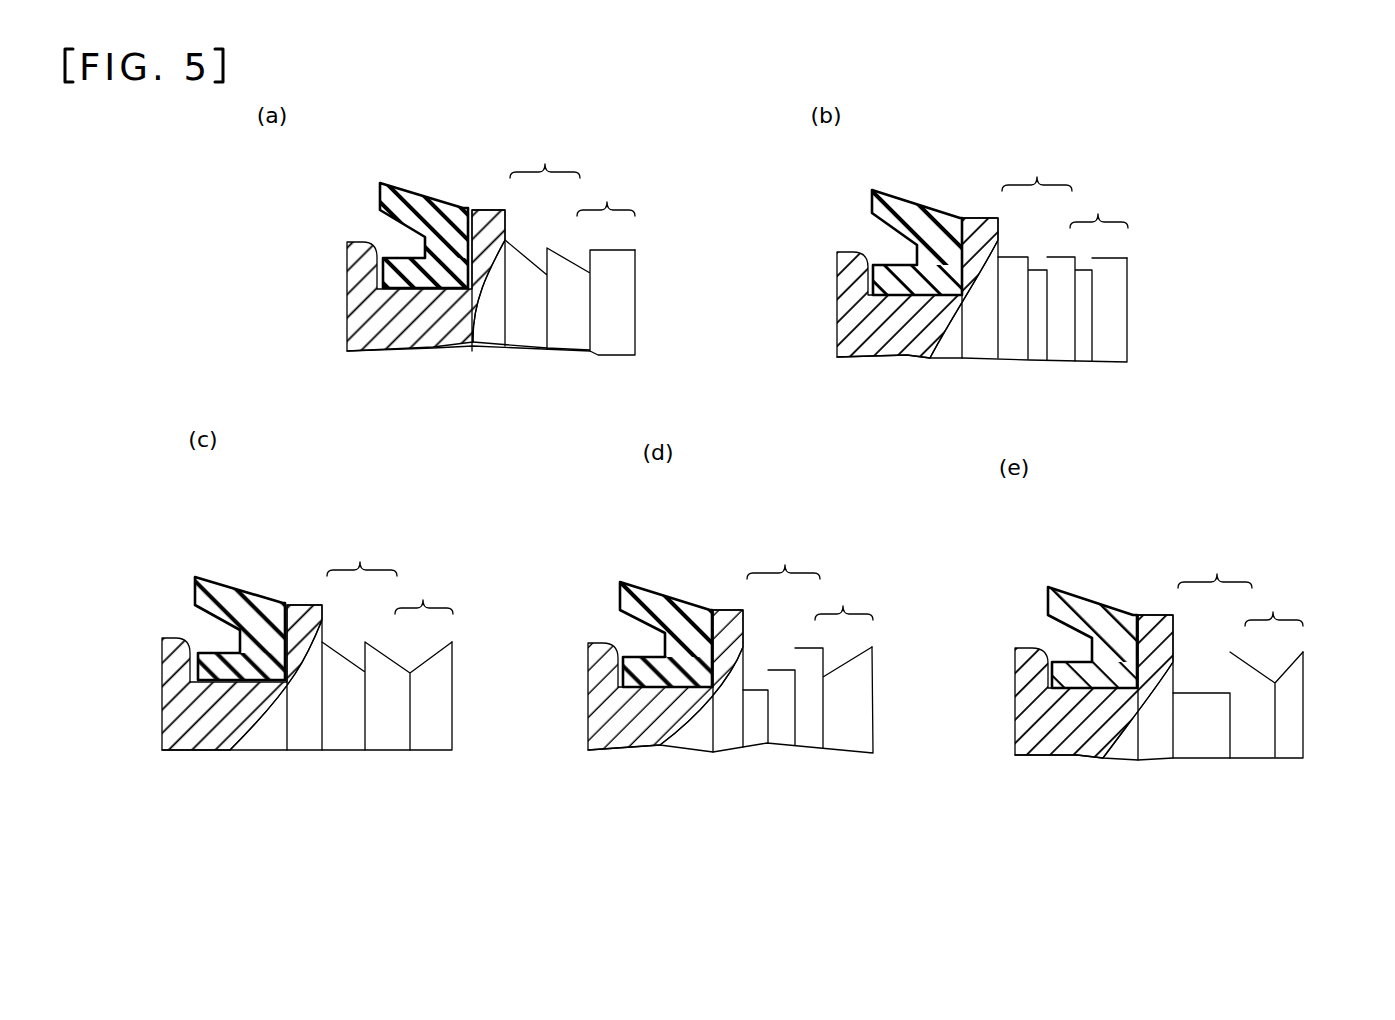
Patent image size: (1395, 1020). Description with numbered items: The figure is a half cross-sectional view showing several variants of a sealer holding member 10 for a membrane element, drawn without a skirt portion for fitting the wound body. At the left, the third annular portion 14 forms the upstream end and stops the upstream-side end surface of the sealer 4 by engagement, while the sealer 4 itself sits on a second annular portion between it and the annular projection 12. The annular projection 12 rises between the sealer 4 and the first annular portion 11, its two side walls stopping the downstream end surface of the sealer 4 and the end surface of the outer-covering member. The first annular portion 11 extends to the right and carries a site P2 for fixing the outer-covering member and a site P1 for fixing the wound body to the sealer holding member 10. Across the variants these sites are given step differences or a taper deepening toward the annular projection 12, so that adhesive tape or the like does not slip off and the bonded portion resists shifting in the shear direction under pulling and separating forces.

The sealer 4 is at (413, 192).
The sealer holding member 10 is at (602, 147).
The first annular portion 11 is at (648, 270).
The annular projection 12 is at (487, 208).
The third annular portion 14 is at (353, 232).
The site for fixing the wound body P1 is at (849, 393).
The site for fixing the outer-covering member P2 is at (789, 354).